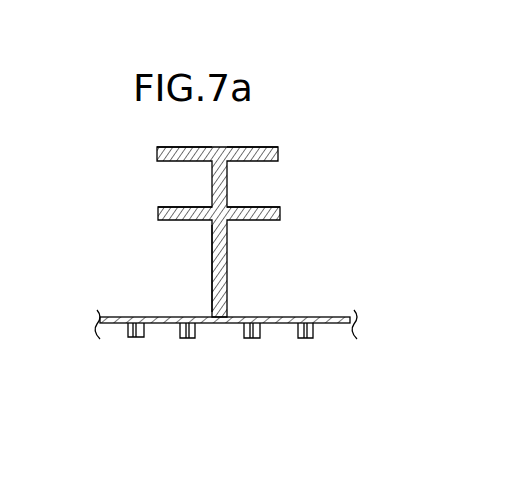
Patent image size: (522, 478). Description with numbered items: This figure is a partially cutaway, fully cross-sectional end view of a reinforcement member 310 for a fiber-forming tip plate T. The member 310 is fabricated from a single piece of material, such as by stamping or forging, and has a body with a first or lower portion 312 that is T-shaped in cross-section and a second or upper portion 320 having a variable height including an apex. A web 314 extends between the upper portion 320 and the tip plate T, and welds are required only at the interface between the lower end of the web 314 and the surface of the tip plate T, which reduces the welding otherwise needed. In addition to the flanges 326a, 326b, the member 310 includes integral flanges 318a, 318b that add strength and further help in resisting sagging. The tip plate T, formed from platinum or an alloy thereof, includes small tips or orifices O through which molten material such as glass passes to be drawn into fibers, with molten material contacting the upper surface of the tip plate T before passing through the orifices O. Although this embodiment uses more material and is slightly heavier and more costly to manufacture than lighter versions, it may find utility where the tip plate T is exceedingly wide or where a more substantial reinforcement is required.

The reinforcement member 310 is at (283, 97).
The lower portion 312 is at (95, 280).
The web 314 is at (219, 283).
The integral flange 318a is at (158, 217).
The integral flange 318b is at (279, 209).
The upper portion 320 is at (143, 190).
The flange 326a is at (162, 150).
The flange 326b is at (275, 152).
The orifice O is at (183, 337).
The tip plate T is at (283, 333).